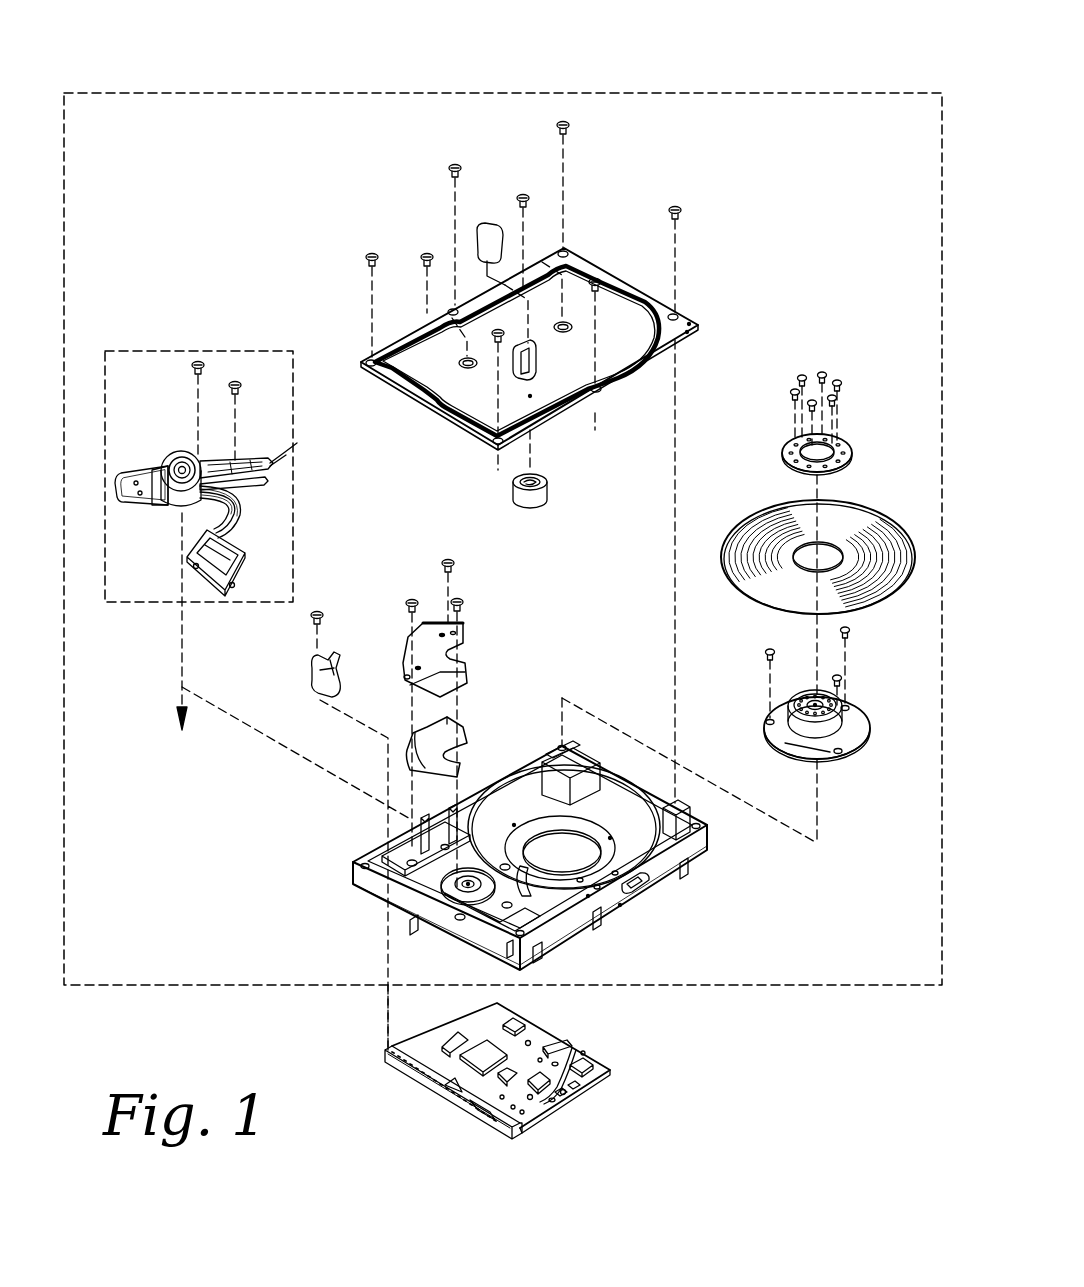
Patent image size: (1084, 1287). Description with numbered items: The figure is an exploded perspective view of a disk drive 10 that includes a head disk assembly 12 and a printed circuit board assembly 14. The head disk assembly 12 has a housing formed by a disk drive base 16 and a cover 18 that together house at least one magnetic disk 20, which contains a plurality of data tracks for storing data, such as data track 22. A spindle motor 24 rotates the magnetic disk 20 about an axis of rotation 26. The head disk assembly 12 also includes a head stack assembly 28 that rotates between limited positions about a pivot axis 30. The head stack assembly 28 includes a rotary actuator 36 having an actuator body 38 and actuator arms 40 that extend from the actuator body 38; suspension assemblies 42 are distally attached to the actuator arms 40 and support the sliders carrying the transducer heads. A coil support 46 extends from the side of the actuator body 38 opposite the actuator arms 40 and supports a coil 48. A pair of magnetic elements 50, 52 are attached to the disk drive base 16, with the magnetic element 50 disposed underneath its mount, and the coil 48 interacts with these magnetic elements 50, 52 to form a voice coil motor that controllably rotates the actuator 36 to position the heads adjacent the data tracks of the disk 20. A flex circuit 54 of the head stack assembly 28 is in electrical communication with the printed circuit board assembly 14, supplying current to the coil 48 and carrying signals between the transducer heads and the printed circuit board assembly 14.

The disk drive 10 is at (283, 68).
The head disk assembly 12 is at (213, 988).
The printed circuit board assembly 14 is at (597, 1082).
The disk drive base 16 is at (658, 882).
The cover 18 is at (620, 353).
The magnetic disk 20 is at (730, 568).
The data track 22 is at (858, 595).
The spindle motor 24 is at (860, 718).
The axis of rotation 26 is at (823, 803).
The head stack assembly 28 is at (223, 455).
The pivot axis 30 is at (182, 633).
The rotary actuator 36 is at (182, 457).
The actuator body 38 is at (172, 461).
The actuator arms 40 is at (222, 460).
The suspension assemblies 42 is at (299, 444).
The coil support 46 is at (165, 505).
The coil 48 is at (130, 502).
The magnetic element 50 is at (452, 657).
The magnetic element 52 is at (445, 725).
The flex circuit 54 is at (240, 513).